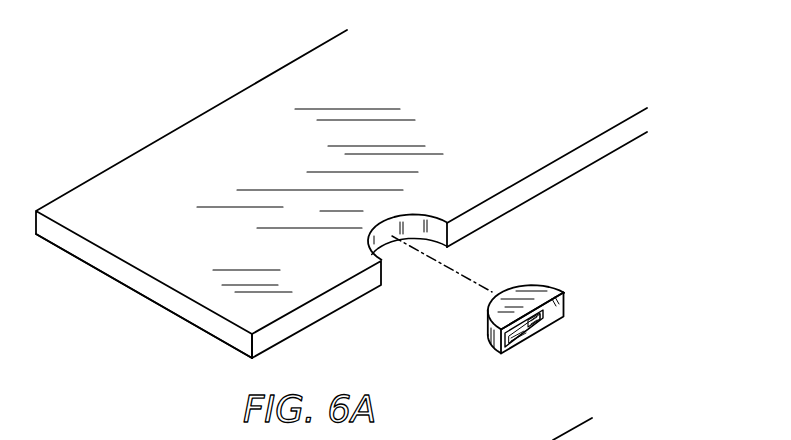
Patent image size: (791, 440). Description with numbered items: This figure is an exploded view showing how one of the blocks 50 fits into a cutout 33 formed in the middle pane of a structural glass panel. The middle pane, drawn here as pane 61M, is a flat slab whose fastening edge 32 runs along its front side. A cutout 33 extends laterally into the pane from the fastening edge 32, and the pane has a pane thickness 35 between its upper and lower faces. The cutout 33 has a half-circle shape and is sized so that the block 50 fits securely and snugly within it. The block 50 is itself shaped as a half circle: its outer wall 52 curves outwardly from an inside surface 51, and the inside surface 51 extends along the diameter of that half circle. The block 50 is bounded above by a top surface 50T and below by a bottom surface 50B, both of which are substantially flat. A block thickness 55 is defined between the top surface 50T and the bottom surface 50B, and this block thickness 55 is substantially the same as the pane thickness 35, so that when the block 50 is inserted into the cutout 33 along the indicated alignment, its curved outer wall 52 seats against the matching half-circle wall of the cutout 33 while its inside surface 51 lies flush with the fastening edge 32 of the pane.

The fastening edge 32 is at (593, 151).
The cutout 33 is at (387, 240).
The pane thickness 35 is at (250, 352).
The housing side wall 61M is at (100, 272).
The block 50 is at (527, 309).
The top surface 50T is at (510, 292).
The bottom surface 50B is at (555, 325).
The inside surface 51 is at (565, 300).
The outer wall 52 is at (497, 334).
The block thickness 55 is at (500, 347).